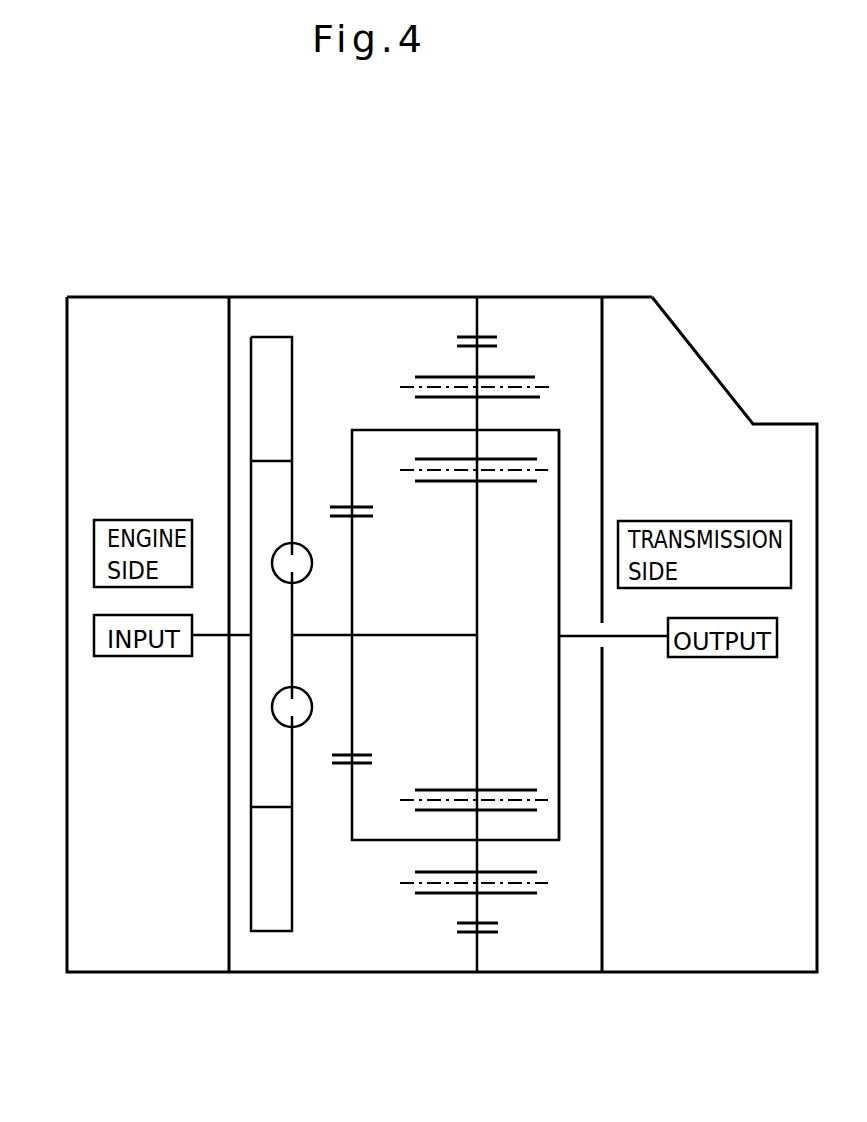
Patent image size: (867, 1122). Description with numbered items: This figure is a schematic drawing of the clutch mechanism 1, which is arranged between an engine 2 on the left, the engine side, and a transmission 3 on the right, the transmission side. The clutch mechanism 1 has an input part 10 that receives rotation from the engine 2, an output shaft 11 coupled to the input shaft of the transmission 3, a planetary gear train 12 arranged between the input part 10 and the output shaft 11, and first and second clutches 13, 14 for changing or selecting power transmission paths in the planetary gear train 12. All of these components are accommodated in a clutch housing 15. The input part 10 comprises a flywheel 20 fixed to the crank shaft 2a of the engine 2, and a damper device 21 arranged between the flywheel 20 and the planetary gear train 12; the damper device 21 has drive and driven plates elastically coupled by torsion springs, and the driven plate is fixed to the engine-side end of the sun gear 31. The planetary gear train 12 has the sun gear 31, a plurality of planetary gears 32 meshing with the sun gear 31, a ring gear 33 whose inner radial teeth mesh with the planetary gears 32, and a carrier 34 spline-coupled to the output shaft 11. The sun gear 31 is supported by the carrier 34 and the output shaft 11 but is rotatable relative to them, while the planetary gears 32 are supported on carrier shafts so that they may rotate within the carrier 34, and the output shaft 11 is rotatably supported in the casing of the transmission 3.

The clutch mechanism 1 is at (253, 292).
The engine 2 is at (144, 292).
The crank shaft 2a is at (212, 640).
The transmission 3 is at (639, 296).
The input part 10 is at (292, 358).
The output shaft 11 is at (635, 634).
The planetary gear train 12 is at (566, 418).
The first clutch 13 is at (366, 502).
The second clutch 14 is at (488, 332).
The clutch housing 15 is at (347, 295).
The flywheel 20 is at (262, 355).
The damper device 21 is at (280, 582).
The sun gear 31 is at (478, 550).
The planetary gears 32 is at (545, 396).
The ring gear 33 is at (527, 384).
The carrier 34 is at (559, 508).